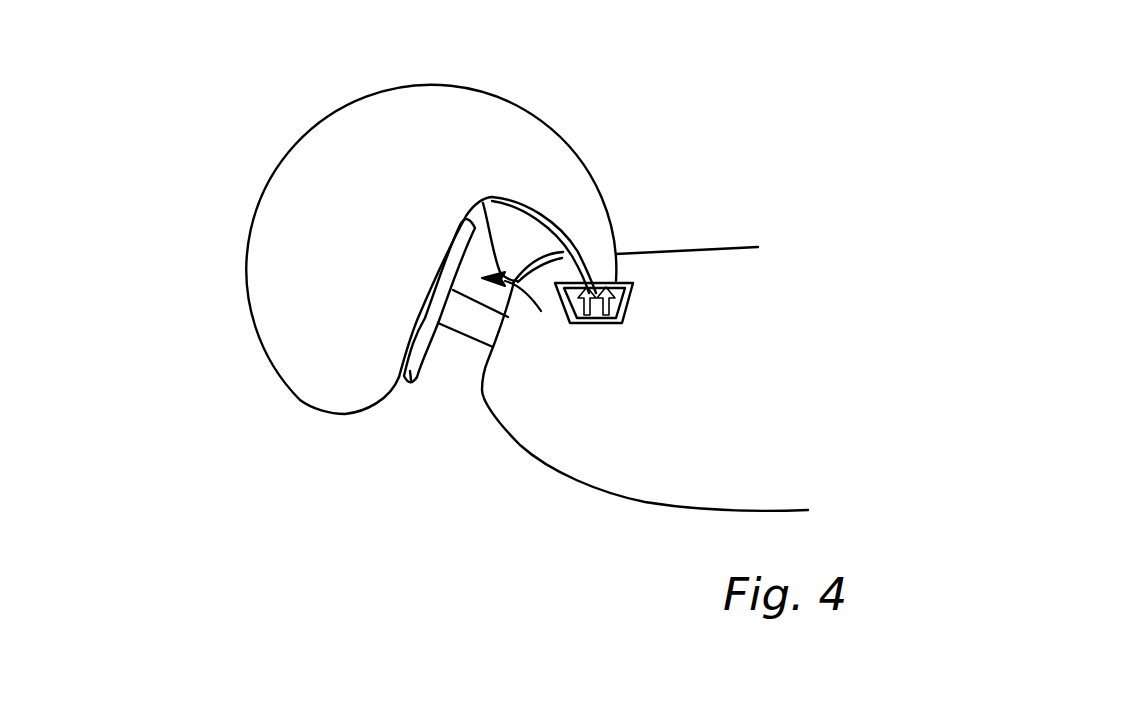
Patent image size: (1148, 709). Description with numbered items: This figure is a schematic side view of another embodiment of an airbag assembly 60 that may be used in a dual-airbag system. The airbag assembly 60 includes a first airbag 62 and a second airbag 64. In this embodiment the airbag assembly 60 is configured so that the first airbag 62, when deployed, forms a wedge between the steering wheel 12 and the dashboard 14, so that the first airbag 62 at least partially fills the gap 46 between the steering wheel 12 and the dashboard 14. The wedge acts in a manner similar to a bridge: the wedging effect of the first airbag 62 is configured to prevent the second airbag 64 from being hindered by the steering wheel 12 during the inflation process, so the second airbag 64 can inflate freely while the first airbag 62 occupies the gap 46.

The balloon catheter tip assembly 60 is at (232, 152).
The balloon 64 is at (360, 113).
The balloon wall layer 62 is at (522, 218).
The catheter tip 12 is at (412, 385).
The tissue surface 14 is at (720, 250).
The fluid flow direction 46 is at (519, 310).